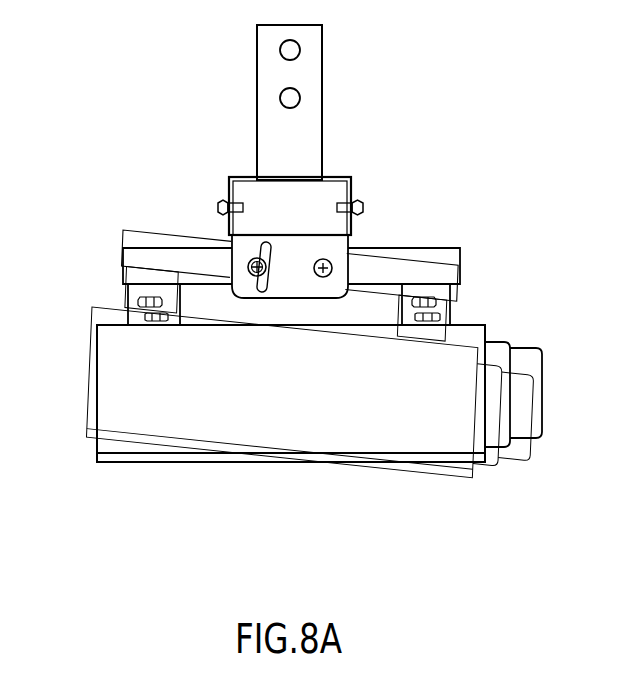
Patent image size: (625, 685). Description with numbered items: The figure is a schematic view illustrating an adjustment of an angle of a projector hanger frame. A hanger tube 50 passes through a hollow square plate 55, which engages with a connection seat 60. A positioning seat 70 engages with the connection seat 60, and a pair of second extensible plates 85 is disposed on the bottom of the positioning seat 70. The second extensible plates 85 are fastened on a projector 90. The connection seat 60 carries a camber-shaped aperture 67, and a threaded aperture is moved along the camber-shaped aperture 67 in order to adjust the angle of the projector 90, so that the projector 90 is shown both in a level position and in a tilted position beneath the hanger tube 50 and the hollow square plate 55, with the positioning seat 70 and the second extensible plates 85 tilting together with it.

The hanger tube 50 is at (318, 90).
The hollow square plate 55 is at (338, 175).
The connection seat 60 is at (333, 245).
The camber-shaped aperture 67 is at (255, 283).
The positioning seat 70 is at (440, 255).
The second extensible plates 85 is at (128, 298).
The projector 90 is at (423, 432).